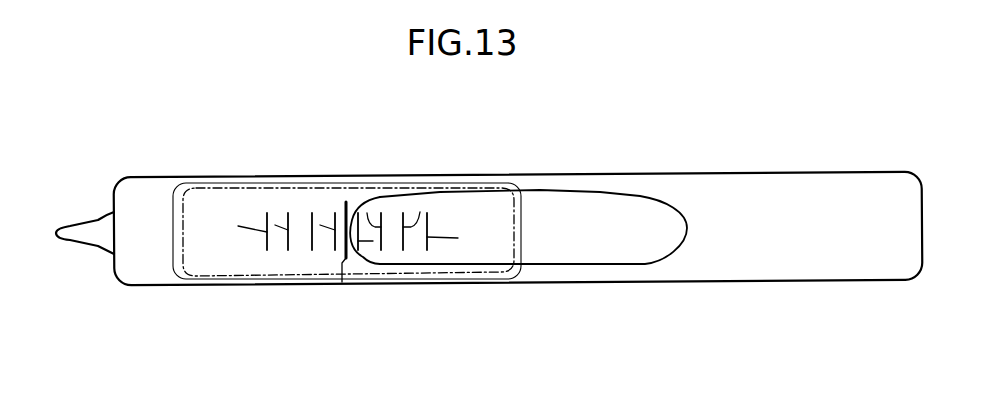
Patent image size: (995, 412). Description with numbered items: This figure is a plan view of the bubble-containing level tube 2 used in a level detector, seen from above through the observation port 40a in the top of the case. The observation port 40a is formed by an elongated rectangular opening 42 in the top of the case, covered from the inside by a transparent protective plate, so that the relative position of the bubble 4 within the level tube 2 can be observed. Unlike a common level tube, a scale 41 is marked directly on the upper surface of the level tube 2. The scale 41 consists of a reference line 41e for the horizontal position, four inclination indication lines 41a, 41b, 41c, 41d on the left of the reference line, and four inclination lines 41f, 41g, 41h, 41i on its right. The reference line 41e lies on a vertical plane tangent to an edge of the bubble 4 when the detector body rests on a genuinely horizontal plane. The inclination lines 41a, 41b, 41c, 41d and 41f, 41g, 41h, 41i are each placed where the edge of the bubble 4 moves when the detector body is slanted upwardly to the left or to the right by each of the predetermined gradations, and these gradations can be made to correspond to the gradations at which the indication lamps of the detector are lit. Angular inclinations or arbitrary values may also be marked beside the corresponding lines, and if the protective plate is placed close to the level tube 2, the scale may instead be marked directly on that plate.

The bubble-containing level tube 2 is at (756, 250).
The bubble 4 is at (622, 263).
The observation port 40a is at (488, 220).
The scale 41 is at (328, 254).
The inclination indication line 41a is at (235, 186).
The inclination indication line 41b is at (266, 172).
The inclination indication line 41c is at (309, 237).
The inclination indication line 41d is at (311, 187).
The reference line 41e is at (342, 282).
The inclination line 41f is at (373, 241).
The inclination line 41g is at (359, 172).
The inclination line 41h is at (434, 182).
The inclination line 41i is at (458, 238).
The elongated rectangular opening 42 is at (203, 257).